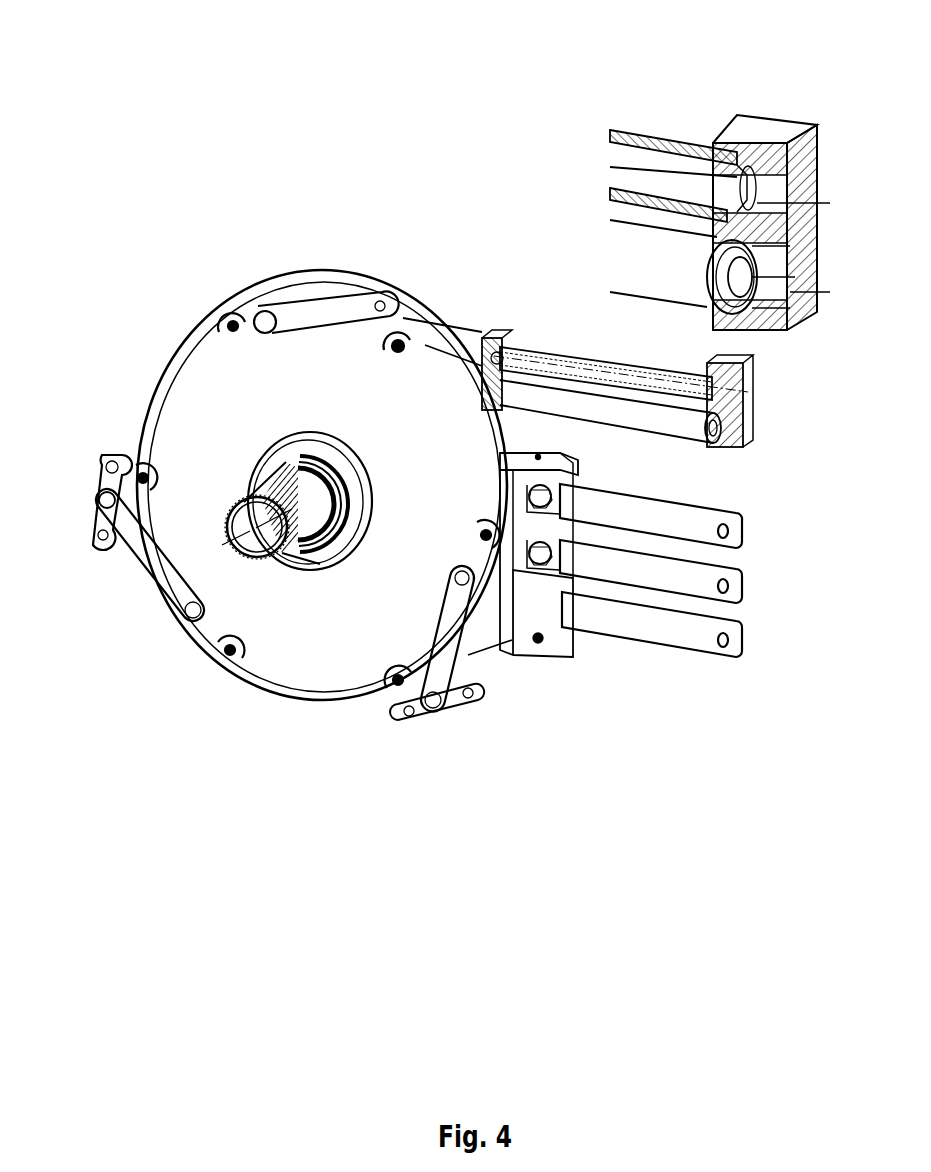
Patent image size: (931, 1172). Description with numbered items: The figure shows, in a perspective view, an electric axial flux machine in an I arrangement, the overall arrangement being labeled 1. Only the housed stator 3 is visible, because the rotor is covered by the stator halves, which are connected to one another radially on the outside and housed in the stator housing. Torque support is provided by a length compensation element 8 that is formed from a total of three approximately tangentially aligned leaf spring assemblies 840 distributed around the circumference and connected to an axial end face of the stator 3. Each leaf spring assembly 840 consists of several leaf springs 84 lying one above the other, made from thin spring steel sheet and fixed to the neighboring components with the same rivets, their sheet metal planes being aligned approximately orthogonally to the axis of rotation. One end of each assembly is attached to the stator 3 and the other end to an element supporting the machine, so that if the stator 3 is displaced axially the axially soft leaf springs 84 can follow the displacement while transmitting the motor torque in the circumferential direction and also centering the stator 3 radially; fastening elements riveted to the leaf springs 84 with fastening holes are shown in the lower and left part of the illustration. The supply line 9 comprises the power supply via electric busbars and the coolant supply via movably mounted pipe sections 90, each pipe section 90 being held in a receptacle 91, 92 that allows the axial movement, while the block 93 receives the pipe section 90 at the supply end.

The device 1 is at (272, 218).
The stator 3 is at (263, 287).
The length compensation element 8 is at (423, 410).
The supply line 9 is at (648, 130).
The leaf spring 84 is at (483, 681).
The leaf spring assembly 840 is at (447, 697).
The pipe section 90 is at (647, 413).
The receptacle (for pipe section) 91 is at (519, 344).
The receptacle (for pipe section) 92 is at (702, 372).
The block 93 is at (714, 140).